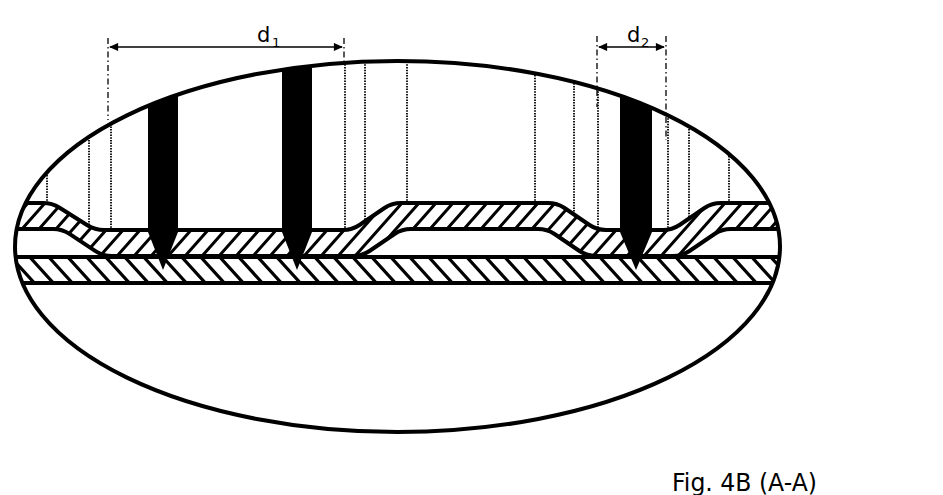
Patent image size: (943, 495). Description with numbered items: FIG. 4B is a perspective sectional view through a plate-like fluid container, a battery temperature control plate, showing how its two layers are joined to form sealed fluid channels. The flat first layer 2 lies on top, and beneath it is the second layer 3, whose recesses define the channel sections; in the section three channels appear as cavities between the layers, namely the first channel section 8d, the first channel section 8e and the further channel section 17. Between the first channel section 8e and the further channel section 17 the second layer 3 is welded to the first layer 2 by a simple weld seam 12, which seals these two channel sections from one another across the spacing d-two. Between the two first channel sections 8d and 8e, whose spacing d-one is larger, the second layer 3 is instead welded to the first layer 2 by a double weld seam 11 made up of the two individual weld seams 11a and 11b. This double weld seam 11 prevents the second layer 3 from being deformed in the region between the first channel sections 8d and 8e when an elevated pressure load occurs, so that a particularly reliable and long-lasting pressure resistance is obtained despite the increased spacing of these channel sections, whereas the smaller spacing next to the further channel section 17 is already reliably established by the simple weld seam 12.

The first layer 2 is at (770, 265).
The second layer 3 is at (760, 213).
The first channel section 8d is at (54, 242).
The first channel section 8e is at (457, 239).
The further channel section 17 is at (741, 242).
The double weld seam 11 is at (230, 155).
The weld seam 11a is at (189, 125).
The weld seam 11b is at (270, 115).
The simple weld seam 12 is at (664, 138).